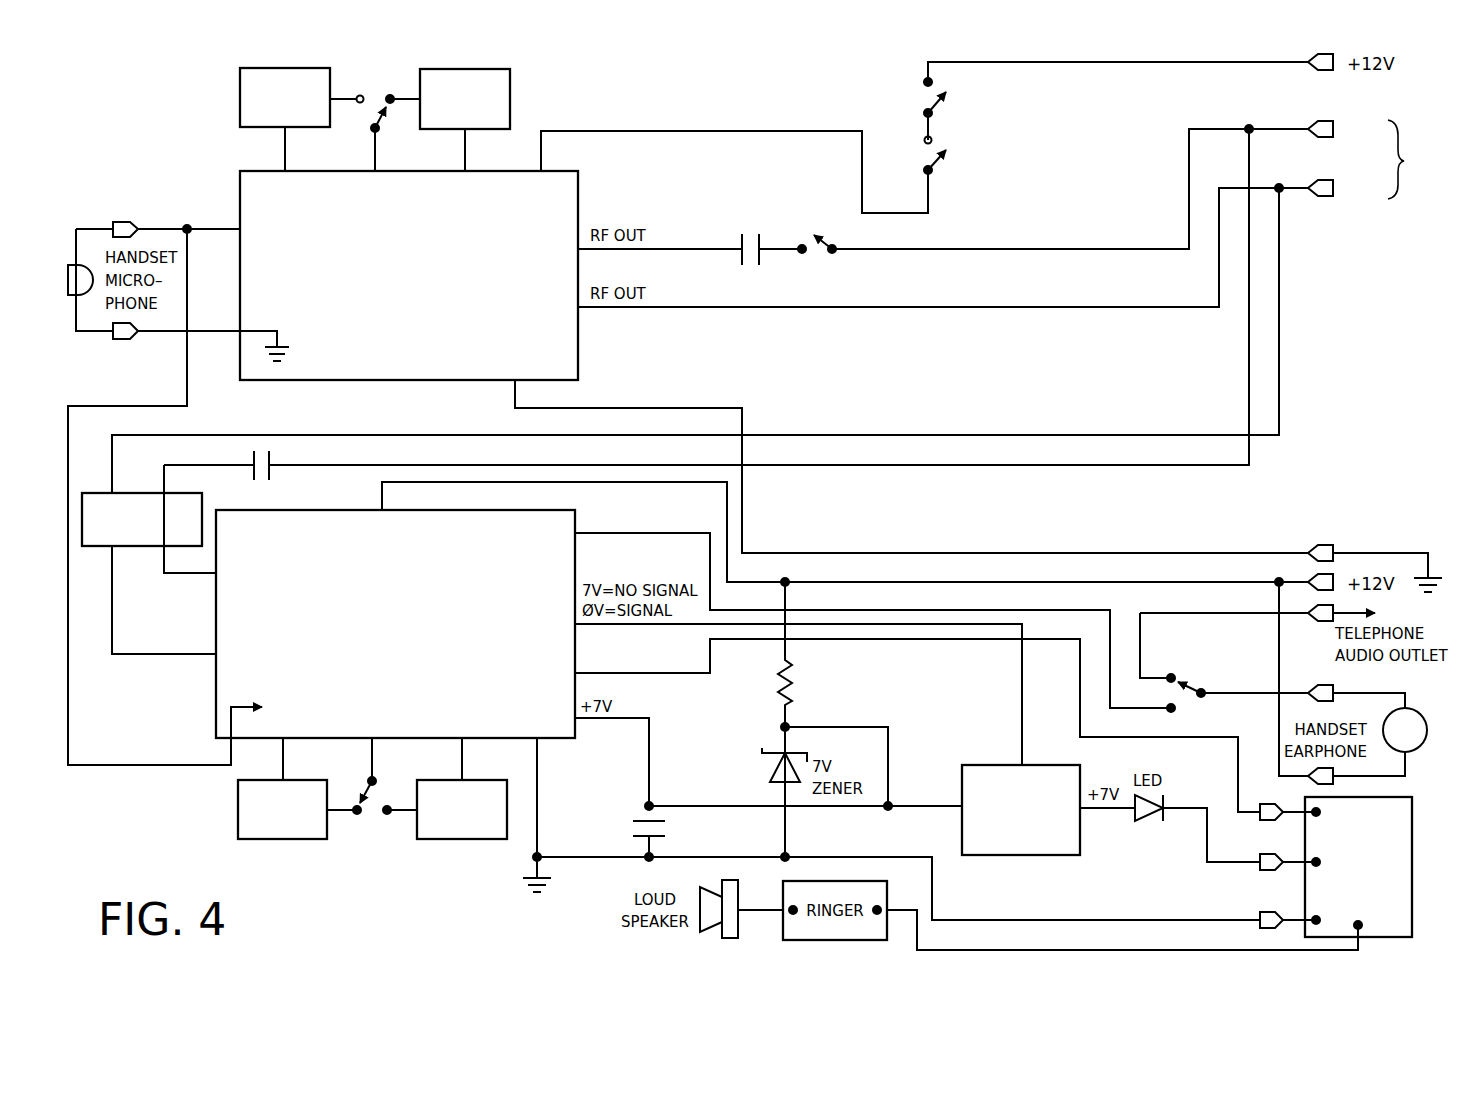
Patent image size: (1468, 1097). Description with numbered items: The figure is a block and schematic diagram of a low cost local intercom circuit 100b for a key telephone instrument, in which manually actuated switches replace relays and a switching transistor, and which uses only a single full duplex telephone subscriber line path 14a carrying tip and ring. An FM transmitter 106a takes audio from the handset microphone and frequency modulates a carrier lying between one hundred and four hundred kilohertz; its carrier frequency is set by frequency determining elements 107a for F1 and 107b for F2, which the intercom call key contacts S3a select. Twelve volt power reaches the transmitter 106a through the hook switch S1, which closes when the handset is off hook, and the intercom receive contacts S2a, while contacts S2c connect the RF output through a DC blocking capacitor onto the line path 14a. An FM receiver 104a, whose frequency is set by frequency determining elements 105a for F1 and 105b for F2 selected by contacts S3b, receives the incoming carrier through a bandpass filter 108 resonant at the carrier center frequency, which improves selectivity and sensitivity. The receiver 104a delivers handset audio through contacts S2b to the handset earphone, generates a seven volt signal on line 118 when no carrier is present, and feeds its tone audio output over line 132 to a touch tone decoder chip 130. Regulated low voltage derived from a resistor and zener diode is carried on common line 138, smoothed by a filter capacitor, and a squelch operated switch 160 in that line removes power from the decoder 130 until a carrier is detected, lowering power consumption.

The circuit 100b is at (148, 787).
The receiver 104a is at (395, 624).
The frequency determining element 105a is at (238, 823).
The frequency determining element 105b is at (448, 840).
The transmitter 106a is at (409, 275).
The frequency determining element 107a is at (240, 97).
The frequency determining element 107b is at (505, 108).
The bandpass filter 108 is at (147, 547).
The line 118 is at (620, 627).
The touch tone decoder chip 130 is at (1305, 906).
The line 132 is at (956, 642).
The common line 138 is at (706, 806).
The squelch operated switch 160 is at (1044, 850).
The telephone subscriber line path 14a is at (1377, 160).
The hook switch S1 is at (1100, 89).
The switch contacts S2a is at (970, 143).
The switch contacts S2b is at (1224, 671).
The switch contacts S2c is at (817, 260).
The switch contacts S3a is at (375, 115).
The switch contacts S3b is at (372, 795).